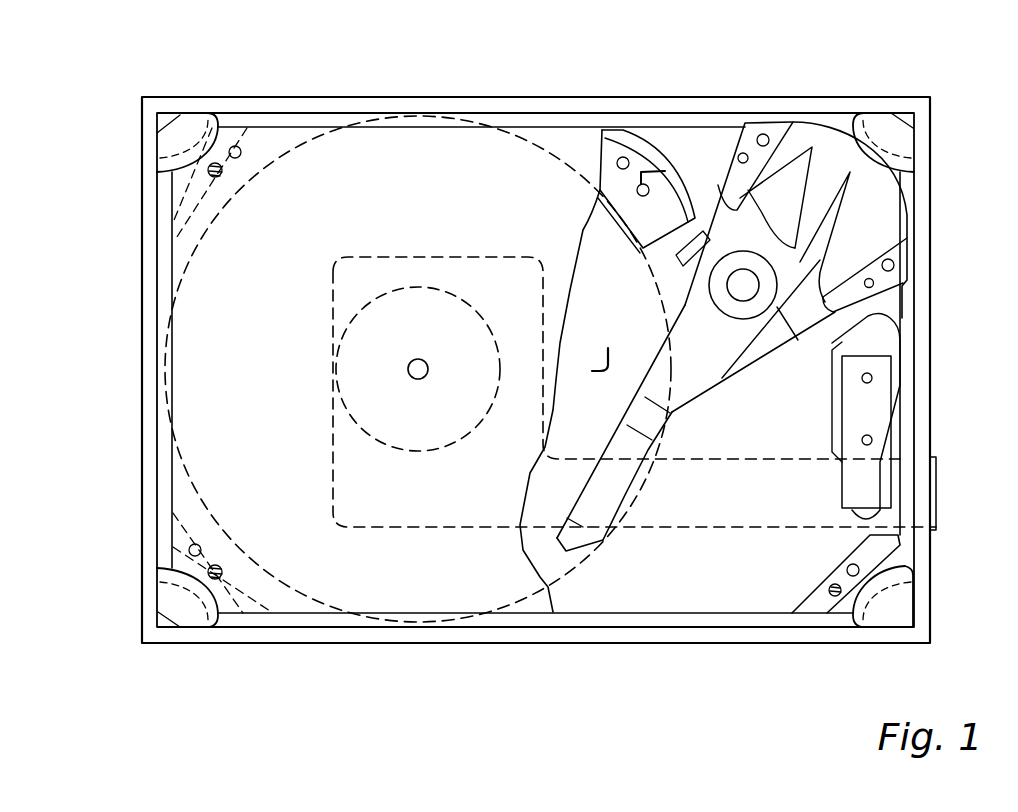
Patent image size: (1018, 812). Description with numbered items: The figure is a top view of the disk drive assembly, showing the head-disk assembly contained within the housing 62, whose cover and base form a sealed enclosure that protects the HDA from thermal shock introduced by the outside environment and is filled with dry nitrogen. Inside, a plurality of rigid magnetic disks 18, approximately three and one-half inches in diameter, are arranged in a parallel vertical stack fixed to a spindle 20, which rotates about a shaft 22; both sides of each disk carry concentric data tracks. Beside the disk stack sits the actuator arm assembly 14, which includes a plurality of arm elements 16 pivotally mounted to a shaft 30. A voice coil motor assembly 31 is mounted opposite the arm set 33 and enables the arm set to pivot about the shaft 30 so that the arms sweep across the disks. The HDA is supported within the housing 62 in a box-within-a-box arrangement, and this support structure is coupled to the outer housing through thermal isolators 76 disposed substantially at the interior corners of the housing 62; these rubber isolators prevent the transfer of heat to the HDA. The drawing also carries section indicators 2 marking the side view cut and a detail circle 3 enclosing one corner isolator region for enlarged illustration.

The actuator arm assembly 14 is at (733, 300).
The arm elements 16 is at (615, 478).
The magnetic disks 18 is at (517, 133).
The spindle 20 is at (470, 307).
The shaft 22 is at (413, 360).
The shaft 30 is at (737, 290).
The voice coil motor assembly 31 is at (838, 130).
The arm set 33 is at (690, 393).
The housing 62 is at (934, 350).
The thermal isolators 76 is at (898, 132).
The section line 2- 2 is at (970, 107).
The detail circle 3 is at (103, 46).